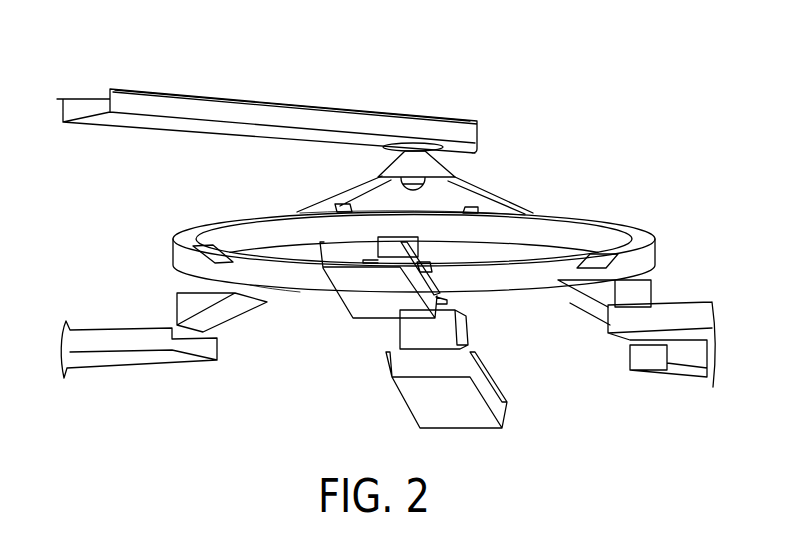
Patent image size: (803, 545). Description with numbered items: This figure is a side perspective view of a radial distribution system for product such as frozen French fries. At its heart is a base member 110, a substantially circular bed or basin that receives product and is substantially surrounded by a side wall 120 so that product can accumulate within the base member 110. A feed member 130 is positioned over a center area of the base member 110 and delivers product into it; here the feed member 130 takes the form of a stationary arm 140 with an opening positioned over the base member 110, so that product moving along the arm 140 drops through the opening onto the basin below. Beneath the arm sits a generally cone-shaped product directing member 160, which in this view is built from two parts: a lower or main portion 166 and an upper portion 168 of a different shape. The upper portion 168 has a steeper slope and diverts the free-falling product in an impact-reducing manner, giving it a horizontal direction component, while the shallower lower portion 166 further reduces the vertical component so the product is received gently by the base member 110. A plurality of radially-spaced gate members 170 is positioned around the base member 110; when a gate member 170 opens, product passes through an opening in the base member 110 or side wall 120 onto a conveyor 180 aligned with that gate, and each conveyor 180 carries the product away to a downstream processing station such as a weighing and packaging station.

The base member 110 is at (298, 293).
The side wall 120 is at (653, 242).
The feed member 130 is at (133, 103).
The stationary arm 140 is at (272, 110).
The product directing member 160 is at (520, 207).
The lower portion 166 is at (250, 228).
The upper portion 168 is at (442, 160).
The gate members 170 is at (177, 293).
The conveyor 180 is at (117, 367).